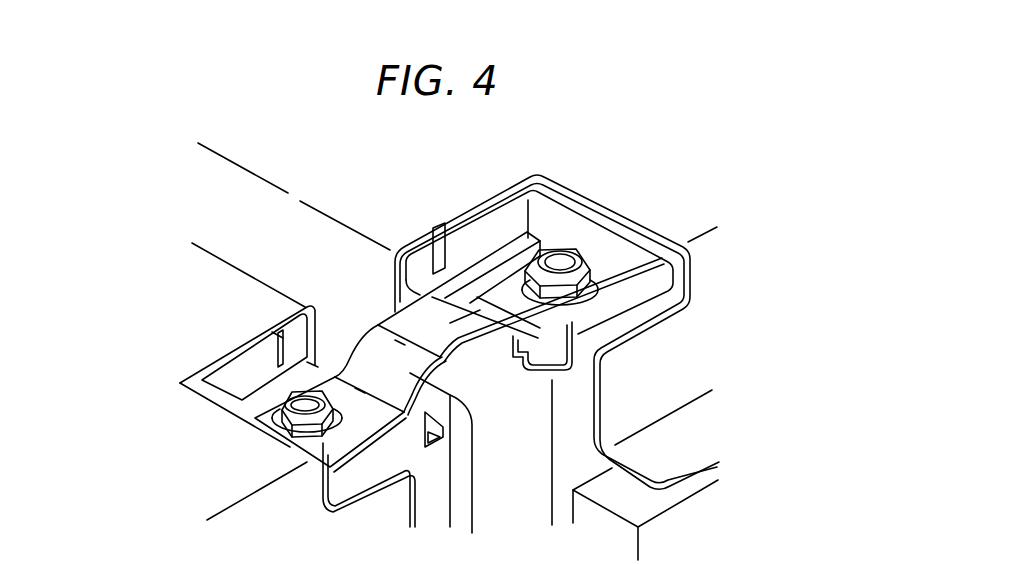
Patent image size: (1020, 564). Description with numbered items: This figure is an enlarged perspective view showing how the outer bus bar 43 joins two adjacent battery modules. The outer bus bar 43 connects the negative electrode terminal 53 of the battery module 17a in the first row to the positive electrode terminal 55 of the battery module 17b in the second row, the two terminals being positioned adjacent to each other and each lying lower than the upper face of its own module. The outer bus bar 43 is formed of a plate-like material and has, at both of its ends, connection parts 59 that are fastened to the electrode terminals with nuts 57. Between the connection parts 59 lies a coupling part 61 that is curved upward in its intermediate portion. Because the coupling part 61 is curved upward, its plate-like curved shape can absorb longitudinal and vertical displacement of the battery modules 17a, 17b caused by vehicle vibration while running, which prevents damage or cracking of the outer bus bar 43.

The battery module 17a is at (220, 303).
The battery module 17b is at (364, 207).
The outer bus bar 43 is at (459, 386).
The negative electrode terminal 53 is at (297, 420).
The positive electrode terminal 55 is at (562, 262).
The nut 57 is at (582, 290).
The connection part 59 is at (543, 313).
The coupling part 61 is at (462, 352).